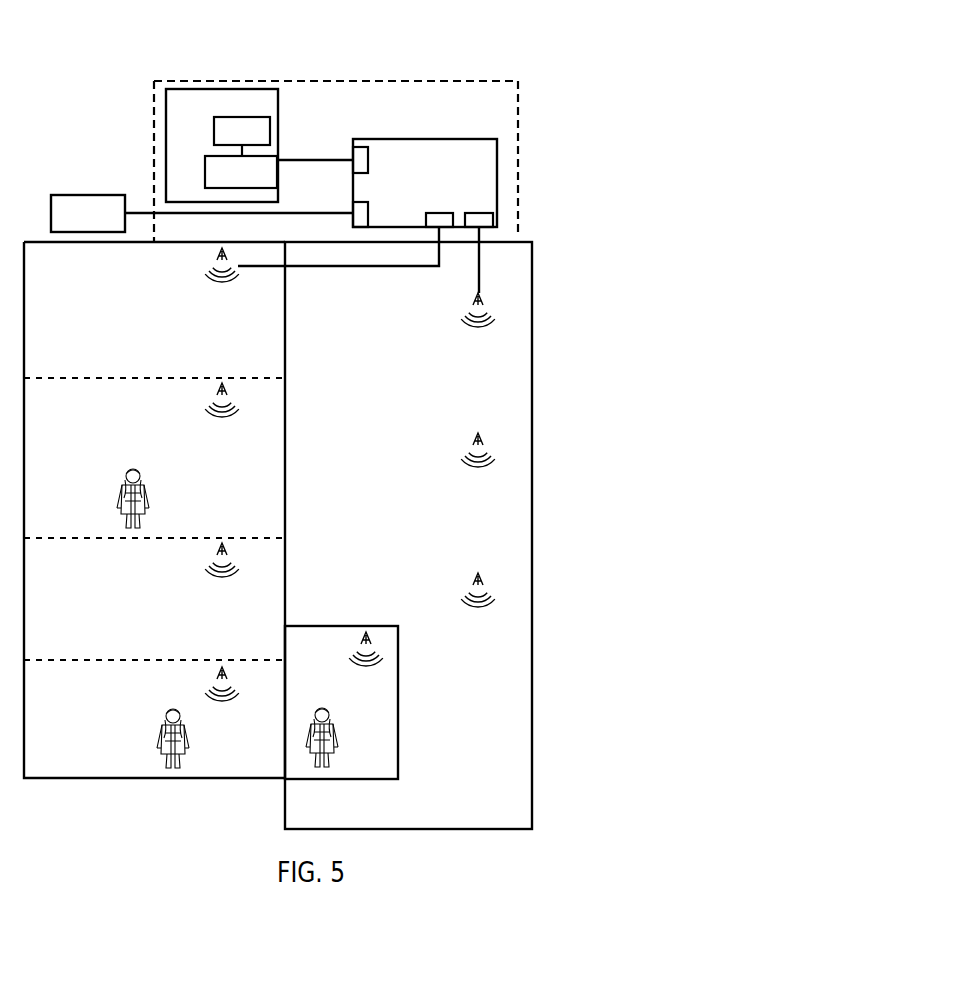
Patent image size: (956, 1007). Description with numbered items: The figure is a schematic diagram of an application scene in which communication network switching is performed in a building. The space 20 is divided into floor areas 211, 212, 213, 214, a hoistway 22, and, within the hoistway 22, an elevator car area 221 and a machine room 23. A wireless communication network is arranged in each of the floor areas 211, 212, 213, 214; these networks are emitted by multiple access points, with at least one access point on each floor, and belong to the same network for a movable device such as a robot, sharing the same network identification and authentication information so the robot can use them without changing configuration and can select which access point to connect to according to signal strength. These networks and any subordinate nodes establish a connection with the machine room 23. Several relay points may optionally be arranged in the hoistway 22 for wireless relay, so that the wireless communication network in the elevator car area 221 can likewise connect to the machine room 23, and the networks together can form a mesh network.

The space 20 is at (617, 184).
The machine room 23 is at (518, 82).
The hoistway 22 is at (503, 817).
The elevator car area 221 is at (400, 662).
The floor area 214 is at (90, 286).
The floor area 213 is at (90, 424).
The floor area 212 is at (90, 584).
The floor area 211 is at (87, 706).